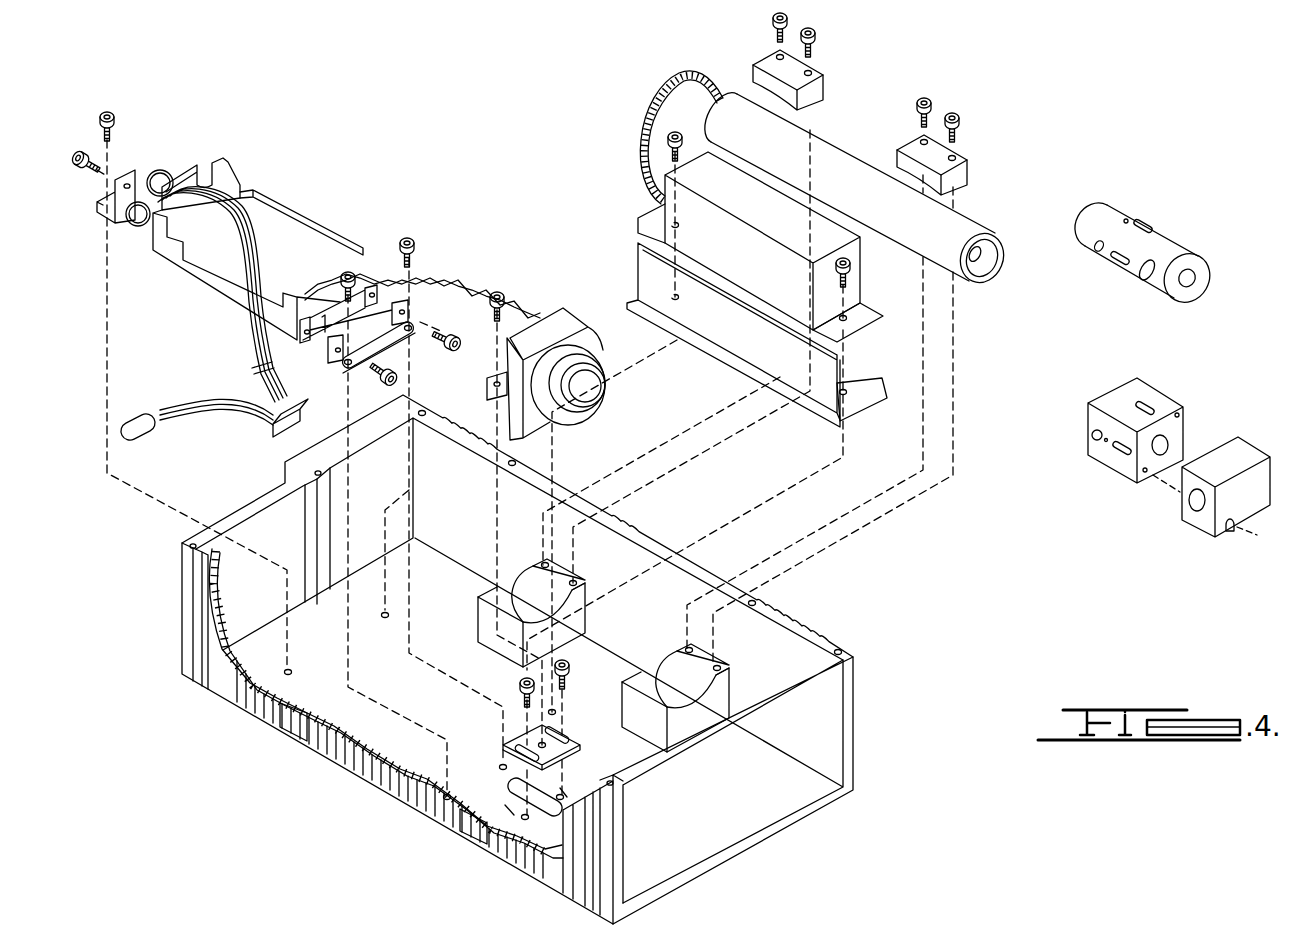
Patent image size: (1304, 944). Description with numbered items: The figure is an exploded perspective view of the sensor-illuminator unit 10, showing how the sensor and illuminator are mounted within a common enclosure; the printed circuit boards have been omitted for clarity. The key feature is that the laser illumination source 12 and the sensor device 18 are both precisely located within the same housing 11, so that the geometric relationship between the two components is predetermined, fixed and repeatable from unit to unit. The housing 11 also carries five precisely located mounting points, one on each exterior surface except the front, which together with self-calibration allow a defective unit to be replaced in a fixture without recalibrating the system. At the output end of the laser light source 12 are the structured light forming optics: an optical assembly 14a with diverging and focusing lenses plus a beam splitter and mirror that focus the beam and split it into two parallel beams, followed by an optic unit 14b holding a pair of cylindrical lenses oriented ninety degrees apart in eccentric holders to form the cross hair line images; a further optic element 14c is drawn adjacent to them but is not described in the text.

The sensor-illuminator unit 10 is at (579, 659).
The housing 11 is at (783, 825).
The illumination source 12 is at (830, 143).
The optical assembly 14a is at (1120, 273).
The optic unit 14b is at (1108, 467).
The block end cap 14c is at (1197, 537).
The sensor device 18 is at (563, 312).